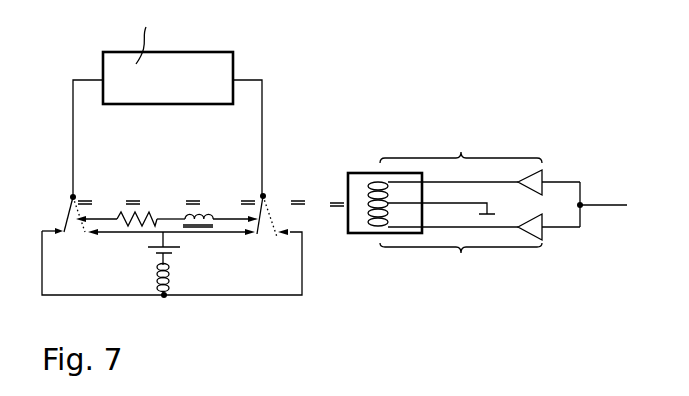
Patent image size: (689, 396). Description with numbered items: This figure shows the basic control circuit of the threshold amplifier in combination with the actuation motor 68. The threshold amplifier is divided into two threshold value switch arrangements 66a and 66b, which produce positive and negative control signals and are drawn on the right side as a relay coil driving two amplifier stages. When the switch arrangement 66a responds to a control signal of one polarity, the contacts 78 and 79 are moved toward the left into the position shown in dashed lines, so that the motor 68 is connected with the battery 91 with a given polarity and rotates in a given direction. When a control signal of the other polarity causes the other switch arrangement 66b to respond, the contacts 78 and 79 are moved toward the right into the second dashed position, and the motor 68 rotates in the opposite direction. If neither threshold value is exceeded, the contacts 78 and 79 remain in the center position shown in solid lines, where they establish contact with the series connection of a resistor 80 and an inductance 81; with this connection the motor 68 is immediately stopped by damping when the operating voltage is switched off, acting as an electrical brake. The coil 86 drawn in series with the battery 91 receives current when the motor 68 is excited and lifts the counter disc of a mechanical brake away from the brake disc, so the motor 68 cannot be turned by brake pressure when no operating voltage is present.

The motor 68 is at (226, 64).
The contact 78 is at (76, 231).
The contact 79 is at (268, 208).
The resistor 80 is at (145, 213).
The inductance 81 is at (205, 212).
The battery 91 is at (170, 254).
The coil 86 is at (169, 283).
The threshold value switch arrangement 66a is at (480, 163).
The threshold value switch arrangement 66b is at (480, 248).